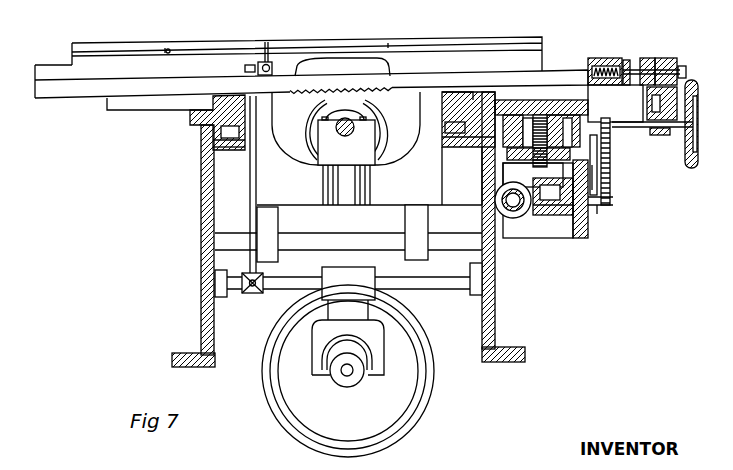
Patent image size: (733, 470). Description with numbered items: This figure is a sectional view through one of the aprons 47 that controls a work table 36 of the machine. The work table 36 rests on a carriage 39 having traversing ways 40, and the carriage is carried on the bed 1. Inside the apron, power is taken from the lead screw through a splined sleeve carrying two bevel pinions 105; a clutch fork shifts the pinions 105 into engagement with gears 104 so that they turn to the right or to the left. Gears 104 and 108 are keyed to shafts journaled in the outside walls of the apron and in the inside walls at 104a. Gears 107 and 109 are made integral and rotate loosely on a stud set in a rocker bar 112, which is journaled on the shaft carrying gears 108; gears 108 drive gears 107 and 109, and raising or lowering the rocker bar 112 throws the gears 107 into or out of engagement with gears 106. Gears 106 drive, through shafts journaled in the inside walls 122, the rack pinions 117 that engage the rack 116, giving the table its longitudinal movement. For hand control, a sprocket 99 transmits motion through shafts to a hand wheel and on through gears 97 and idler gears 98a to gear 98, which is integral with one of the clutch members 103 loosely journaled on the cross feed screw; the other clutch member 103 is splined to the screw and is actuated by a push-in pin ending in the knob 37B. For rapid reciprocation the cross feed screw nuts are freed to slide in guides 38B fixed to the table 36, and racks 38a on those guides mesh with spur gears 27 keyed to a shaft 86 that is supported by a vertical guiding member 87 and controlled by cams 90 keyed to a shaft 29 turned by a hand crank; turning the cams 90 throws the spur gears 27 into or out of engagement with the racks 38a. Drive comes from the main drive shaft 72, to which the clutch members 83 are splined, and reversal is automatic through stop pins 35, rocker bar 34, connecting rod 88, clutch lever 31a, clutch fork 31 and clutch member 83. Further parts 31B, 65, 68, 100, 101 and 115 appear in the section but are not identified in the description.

The bed 1 is at (496, 285).
The spur gears 27 is at (378, 121).
The shaft 29 is at (440, 285).
The clutch fork 31 is at (314, 338).
The clutch lever 31a is at (252, 293).
The shaft 31B is at (444, 290).
The rocker bar 34 is at (268, 48).
The stop pins 35 is at (170, 48).
The work table 36 is at (440, 38).
The knob 37B is at (687, 66).
The racks 38a is at (306, 93).
The guides 38B is at (388, 68).
The carriage 39 is at (52, 93).
The traversing ways 40 is at (216, 105).
The apron 47 is at (589, 232).
The bearing seat 65 is at (245, 139).
The bearing 68 is at (245, 126).
The main drive shaft 72 is at (342, 373).
The clutch member 83 is at (262, 340).
The shaft 86 is at (345, 136).
The vertical guiding member 87 is at (308, 206).
The connecting rod 88 is at (257, 172).
The cams 90 is at (280, 255).
The gears 97 is at (652, 136).
The gear 98 is at (655, 58).
The idler gears 98a is at (647, 111).
The sprocket 99 is at (605, 118).
The shaft 100 is at (613, 200).
The bar 101 is at (598, 160).
The clutch members 103 is at (624, 58).
The gears 104 is at (535, 222).
The inside wall journal 104a is at (548, 238).
The bevel pinions 105 is at (512, 218).
The gears 106 is at (540, 115).
The gear 107 is at (535, 174).
The gears 108 is at (548, 213).
The gear 109 is at (553, 130).
The rocker bar 112 is at (598, 206).
The lever 115 is at (587, 177).
The rack 116 is at (478, 158).
The rack pinions 117 is at (480, 180).
The inside walls 122 is at (505, 105).